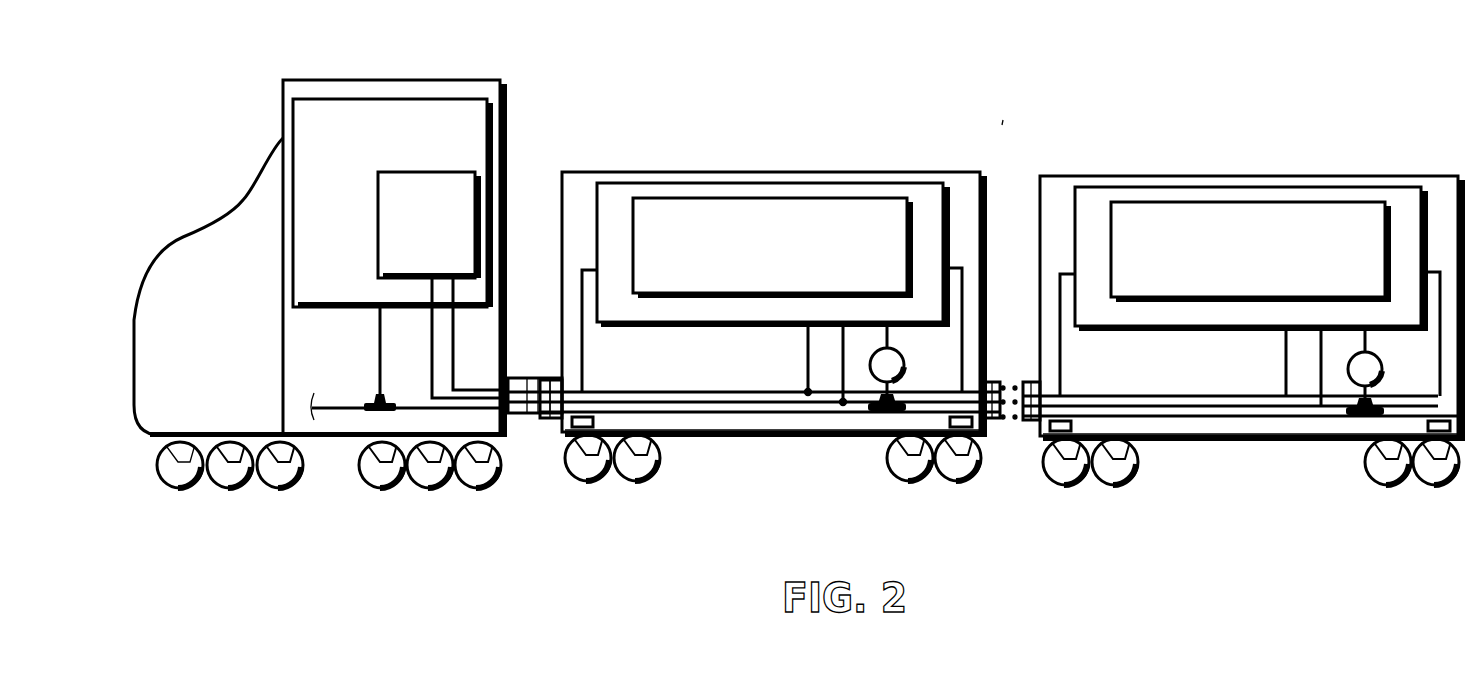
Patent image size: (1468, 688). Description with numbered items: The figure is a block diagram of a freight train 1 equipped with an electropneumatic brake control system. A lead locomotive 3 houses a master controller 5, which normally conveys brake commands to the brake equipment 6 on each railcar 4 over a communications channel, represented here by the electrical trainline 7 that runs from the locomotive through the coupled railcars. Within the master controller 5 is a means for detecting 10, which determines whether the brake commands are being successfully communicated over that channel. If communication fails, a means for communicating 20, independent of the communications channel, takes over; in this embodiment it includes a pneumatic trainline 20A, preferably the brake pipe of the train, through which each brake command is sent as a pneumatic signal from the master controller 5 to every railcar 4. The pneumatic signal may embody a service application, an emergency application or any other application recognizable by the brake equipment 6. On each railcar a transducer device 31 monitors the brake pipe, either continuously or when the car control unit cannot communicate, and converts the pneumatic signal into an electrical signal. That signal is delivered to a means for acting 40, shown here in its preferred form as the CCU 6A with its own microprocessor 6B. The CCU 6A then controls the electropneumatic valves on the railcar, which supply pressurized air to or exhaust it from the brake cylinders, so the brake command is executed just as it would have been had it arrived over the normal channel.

The freight train 1 is at (1000, 133).
The lead locomotive 3 is at (492, 80).
The railcar 4 is at (788, 172).
The master controller 5 is at (350, 99).
The brake equipment 6 is at (757, 417).
The CCU 6A is at (888, 184).
The microprocessor 6B is at (788, 284).
The electrical trainline 7 is at (437, 395).
The means for detecting 10 is at (440, 255).
The means for communicating 20 is at (364, 395).
The pneumatic trainline 20A is at (340, 413).
The transducer device 31 is at (906, 373).
The means for acting 40 is at (750, 331).